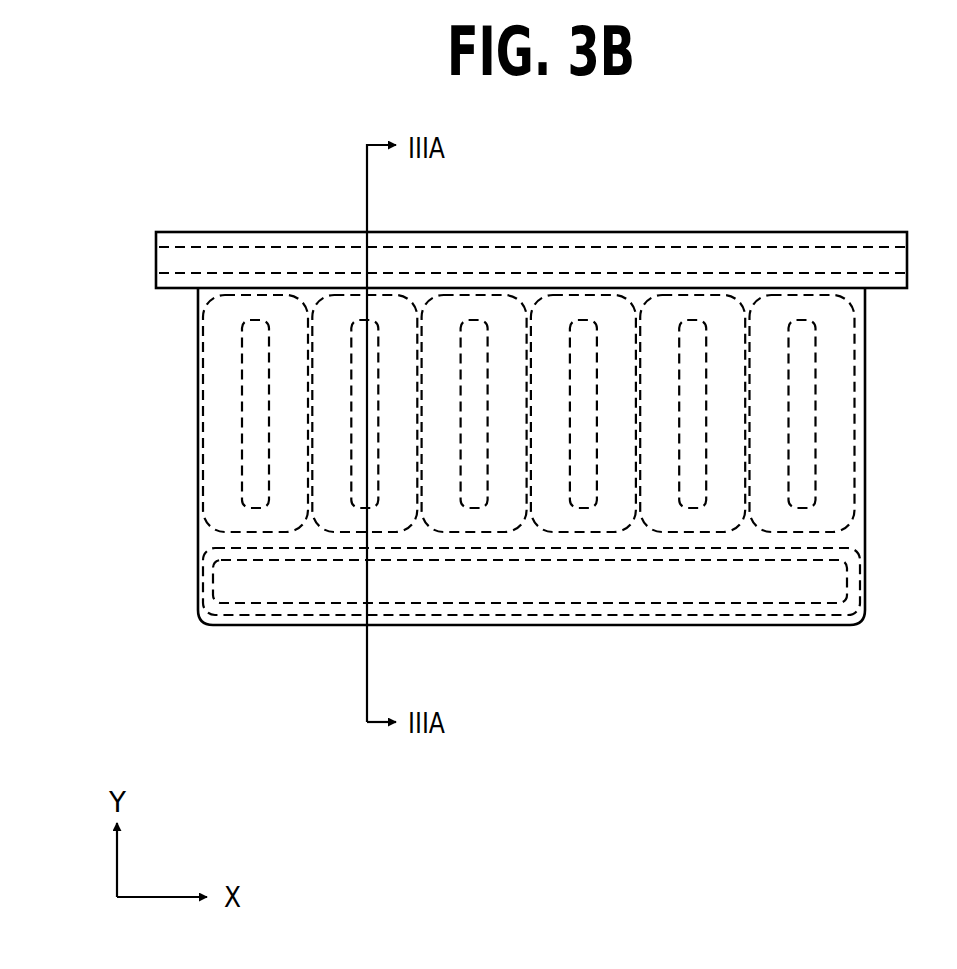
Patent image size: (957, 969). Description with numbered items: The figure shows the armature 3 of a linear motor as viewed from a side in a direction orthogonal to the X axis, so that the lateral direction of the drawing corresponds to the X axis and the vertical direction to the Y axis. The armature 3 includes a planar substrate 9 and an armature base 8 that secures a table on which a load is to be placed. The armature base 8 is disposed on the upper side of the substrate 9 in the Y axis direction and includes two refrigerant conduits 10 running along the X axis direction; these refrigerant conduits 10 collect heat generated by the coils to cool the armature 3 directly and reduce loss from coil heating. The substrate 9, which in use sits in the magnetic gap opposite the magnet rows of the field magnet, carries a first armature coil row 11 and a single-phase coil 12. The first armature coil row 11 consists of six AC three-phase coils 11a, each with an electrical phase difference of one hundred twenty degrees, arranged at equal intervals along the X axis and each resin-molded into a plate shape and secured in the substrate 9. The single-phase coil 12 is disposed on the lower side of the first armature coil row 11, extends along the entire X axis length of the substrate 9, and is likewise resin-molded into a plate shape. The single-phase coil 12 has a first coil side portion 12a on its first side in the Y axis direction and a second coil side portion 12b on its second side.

The armature 3 is at (153, 203).
The armature base 8 is at (526, 241).
The substrate 9 is at (204, 536).
The refrigerant conduits 10 is at (229, 244).
The first armature coil row 11 is at (184, 330).
The AC three-phase coils 11a is at (215, 420).
The single-phase coil 12 is at (866, 580).
The first coil side portion 12a is at (527, 612).
The second coil side portion 12b is at (721, 552).